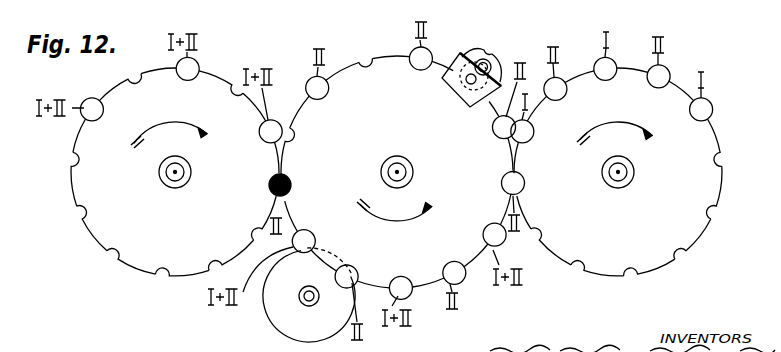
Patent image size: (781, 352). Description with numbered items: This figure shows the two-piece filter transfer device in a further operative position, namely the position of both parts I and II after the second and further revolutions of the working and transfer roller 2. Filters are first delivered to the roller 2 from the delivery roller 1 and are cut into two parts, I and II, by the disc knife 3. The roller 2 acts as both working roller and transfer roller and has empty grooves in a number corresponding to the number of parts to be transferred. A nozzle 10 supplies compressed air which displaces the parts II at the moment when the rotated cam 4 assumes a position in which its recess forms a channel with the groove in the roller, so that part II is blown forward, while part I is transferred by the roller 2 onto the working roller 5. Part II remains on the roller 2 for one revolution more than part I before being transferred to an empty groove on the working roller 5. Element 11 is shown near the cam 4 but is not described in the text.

The delivery roller 1 is at (100, 226).
The working and transfer roller 2 is at (425, 282).
The disc knife 3 is at (275, 313).
The rotated cam 4 is at (473, 82).
The working roller 5 is at (718, 187).
The nozzle 10 is at (463, 88).
The pivot 11 is at (476, 75).